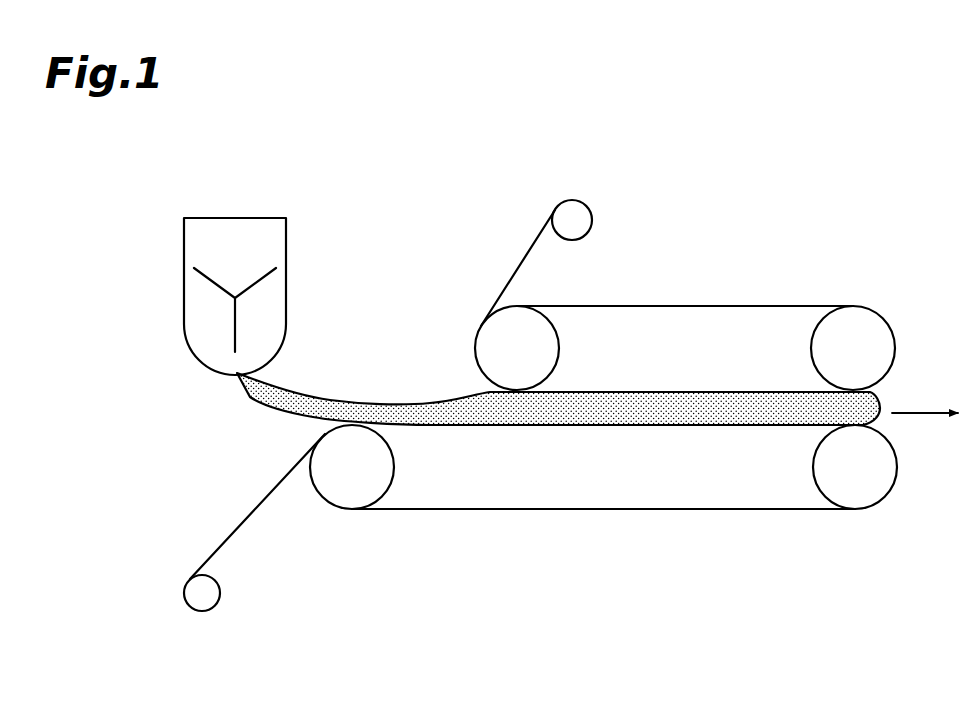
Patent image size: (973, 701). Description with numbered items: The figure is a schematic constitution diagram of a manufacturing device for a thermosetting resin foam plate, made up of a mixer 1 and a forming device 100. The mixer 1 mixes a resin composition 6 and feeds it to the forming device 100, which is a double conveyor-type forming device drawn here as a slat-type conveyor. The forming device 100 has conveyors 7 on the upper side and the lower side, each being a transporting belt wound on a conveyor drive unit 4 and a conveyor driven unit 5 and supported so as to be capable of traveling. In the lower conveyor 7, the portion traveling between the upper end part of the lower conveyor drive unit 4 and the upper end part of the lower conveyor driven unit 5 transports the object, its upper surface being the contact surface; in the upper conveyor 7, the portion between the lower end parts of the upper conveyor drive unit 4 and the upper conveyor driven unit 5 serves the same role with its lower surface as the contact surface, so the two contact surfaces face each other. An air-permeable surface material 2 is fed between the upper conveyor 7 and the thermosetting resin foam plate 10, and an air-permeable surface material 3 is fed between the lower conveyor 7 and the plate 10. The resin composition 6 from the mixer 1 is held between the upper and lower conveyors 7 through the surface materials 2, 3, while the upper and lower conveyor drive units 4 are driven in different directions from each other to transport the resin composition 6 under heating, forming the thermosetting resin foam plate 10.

The forming device 100 is at (830, 127).
The mixer 1 is at (286, 240).
The air-permeable surface material 2 is at (583, 218).
The air-permeable surface material 3 is at (202, 598).
The conveyor drive unit 4 is at (502, 333).
The conveyor driven unit 5 is at (878, 335).
The resin composition 6 is at (312, 395).
The conveyor 7 is at (698, 391).
The thermosetting resin foam plate 10 is at (870, 402).